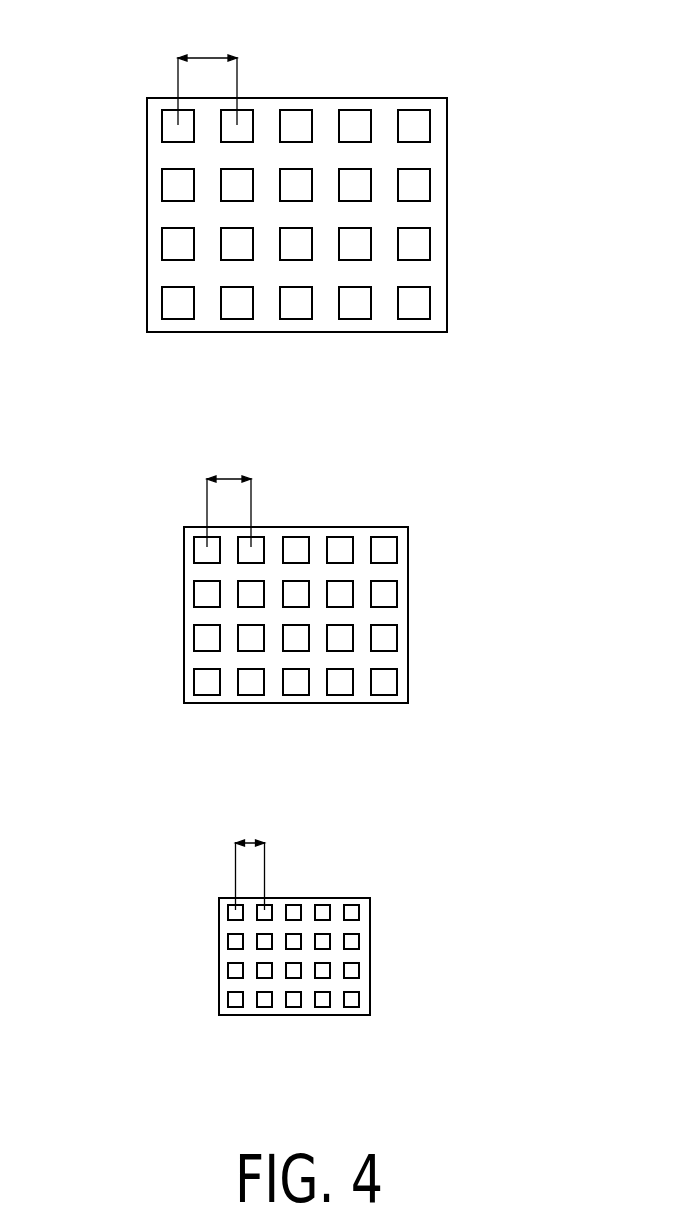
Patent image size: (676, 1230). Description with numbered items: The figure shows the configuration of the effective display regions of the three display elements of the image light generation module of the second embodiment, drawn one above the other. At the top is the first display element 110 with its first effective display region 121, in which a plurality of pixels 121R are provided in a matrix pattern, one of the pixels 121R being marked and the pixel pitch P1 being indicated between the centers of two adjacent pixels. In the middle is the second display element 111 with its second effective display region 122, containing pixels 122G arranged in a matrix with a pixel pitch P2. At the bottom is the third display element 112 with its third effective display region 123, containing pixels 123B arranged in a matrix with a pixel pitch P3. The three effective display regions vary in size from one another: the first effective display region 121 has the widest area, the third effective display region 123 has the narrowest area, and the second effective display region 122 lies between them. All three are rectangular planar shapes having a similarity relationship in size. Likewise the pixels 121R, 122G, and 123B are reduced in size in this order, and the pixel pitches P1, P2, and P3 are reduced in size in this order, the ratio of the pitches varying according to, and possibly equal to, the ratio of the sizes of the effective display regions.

The first display element 110 is at (457, 123).
The second display element 111 is at (420, 545).
The third display element 112 is at (378, 913).
The first effective display region 121 is at (332, 98).
The second effective display region 122 is at (335, 527).
The third effective display region 123 is at (335, 898).
The pixels 121R is at (170, 182).
The pixels 122G is at (200, 594).
The pixels 123B is at (235, 970).
The pixel pitch P1 is at (207, 74).
The pixel pitch P2 is at (229, 495).
The pixel pitch P3 is at (252, 860).